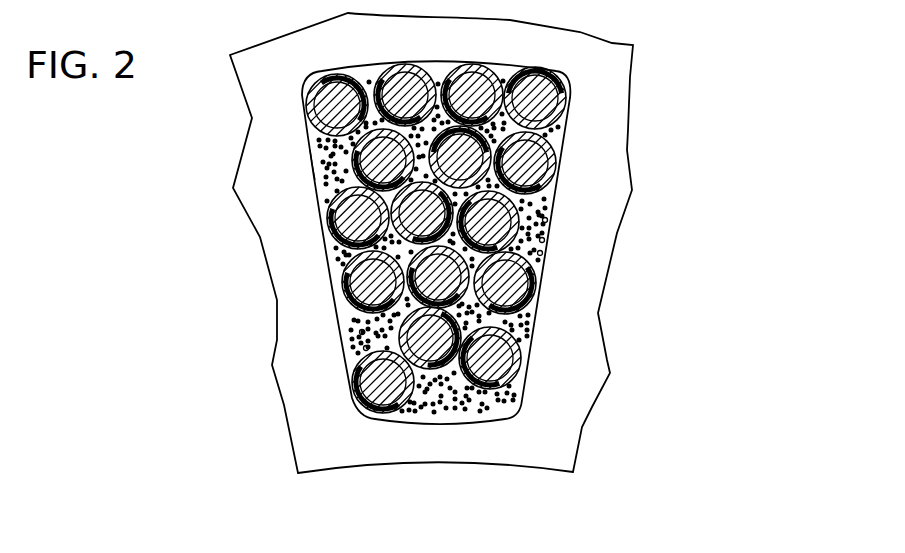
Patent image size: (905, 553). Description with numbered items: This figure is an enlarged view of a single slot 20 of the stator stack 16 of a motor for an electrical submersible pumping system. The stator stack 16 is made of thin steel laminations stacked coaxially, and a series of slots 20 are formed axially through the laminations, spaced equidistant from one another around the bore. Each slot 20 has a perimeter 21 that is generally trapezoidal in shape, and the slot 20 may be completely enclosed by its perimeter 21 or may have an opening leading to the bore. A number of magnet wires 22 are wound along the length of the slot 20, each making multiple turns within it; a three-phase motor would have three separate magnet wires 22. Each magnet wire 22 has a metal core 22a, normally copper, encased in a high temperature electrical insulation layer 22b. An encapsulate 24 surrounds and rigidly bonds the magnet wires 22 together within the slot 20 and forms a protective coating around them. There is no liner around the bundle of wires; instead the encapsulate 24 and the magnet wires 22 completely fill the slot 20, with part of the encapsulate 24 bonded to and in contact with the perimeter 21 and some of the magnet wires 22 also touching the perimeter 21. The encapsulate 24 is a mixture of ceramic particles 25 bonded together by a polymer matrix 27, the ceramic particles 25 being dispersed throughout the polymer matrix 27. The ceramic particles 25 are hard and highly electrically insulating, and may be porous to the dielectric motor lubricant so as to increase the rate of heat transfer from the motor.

The stator stack 16 is at (603, 103).
The slot 20 is at (478, 421).
The perimeter 21 is at (330, 259).
The magnet wires 22 is at (334, 303).
The metal core 22a is at (533, 305).
The electrical insulation layer 22b is at (308, 136).
The encapsulate 24 is at (358, 340).
The ceramic particles 25 is at (540, 253).
The polymer matrix 27 is at (315, 177).